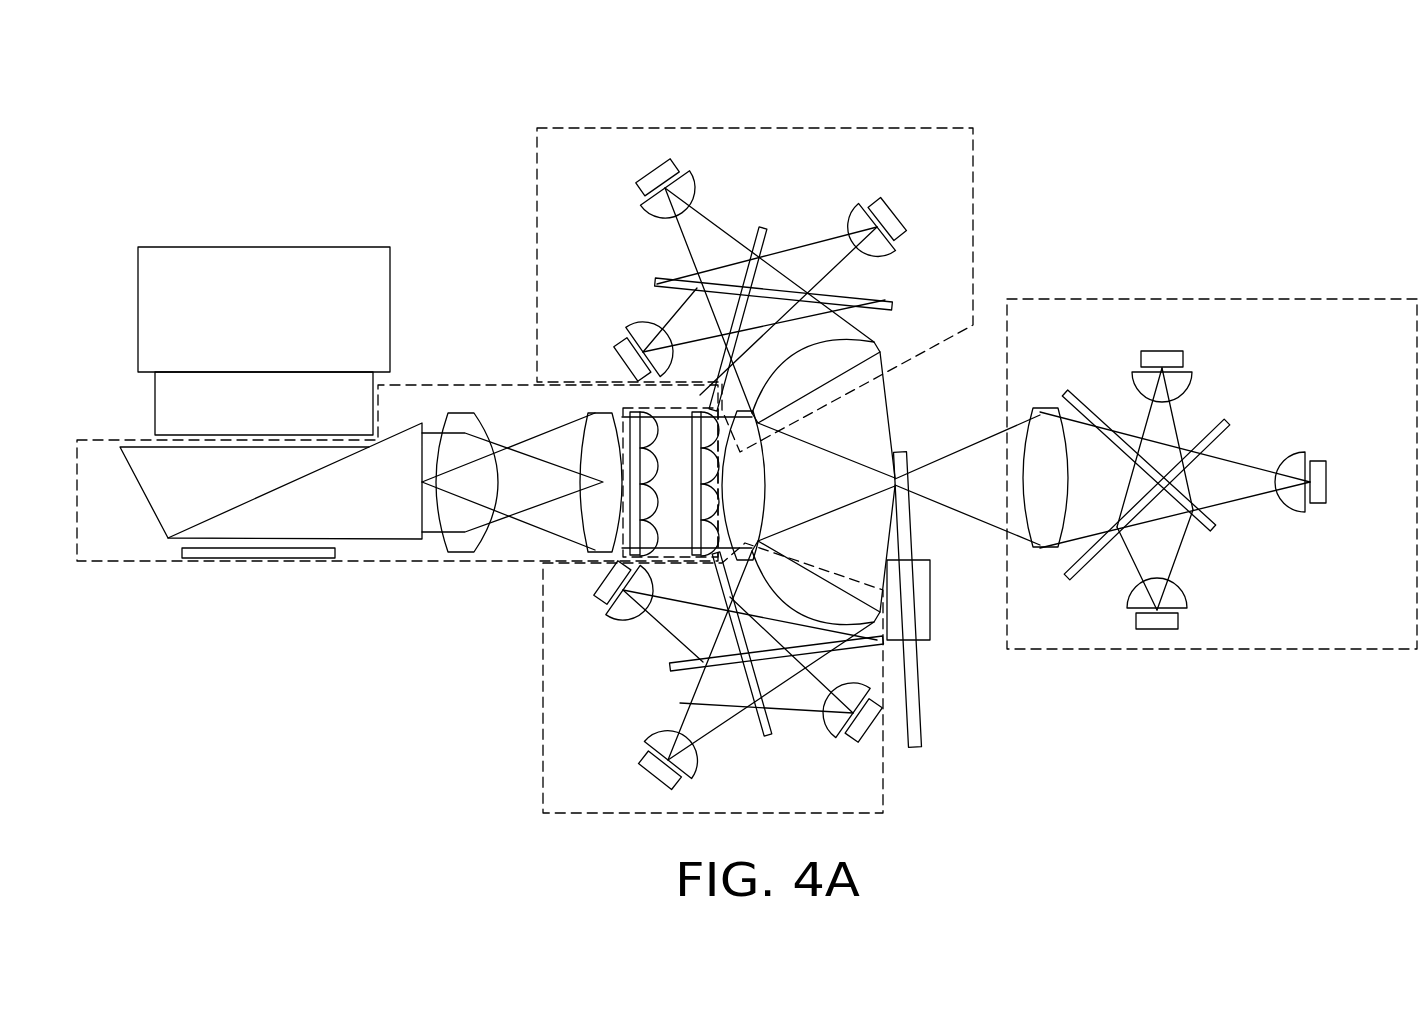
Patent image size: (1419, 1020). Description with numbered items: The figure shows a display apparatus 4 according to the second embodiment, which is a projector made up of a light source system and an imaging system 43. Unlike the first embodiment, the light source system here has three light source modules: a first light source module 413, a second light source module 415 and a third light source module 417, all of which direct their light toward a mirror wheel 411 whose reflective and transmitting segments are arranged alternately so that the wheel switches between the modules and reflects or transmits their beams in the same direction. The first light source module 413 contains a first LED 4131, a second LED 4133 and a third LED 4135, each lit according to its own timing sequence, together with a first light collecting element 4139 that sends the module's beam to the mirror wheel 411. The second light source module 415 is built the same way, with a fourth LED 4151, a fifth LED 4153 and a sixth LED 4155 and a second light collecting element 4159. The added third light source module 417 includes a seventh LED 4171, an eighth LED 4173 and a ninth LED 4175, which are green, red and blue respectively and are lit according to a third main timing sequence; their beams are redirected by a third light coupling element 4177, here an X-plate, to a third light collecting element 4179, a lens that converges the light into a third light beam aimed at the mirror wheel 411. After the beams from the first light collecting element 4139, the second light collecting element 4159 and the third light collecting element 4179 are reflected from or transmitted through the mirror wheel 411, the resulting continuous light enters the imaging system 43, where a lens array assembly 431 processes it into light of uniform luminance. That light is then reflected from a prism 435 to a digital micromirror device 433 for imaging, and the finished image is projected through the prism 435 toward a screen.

The display apparatus 4 is at (953, 95).
The imaging system 43 is at (425, 385).
The lens array assembly 431 is at (660, 410).
The digital micromirror device (DMD) 433 is at (208, 556).
The prism 435 is at (132, 473).
The mirror wheel 411 is at (917, 703).
The first light source module 413 is at (543, 775).
The first LED 4131 is at (637, 613).
The second LED 4133 is at (661, 731).
The third LED 4135 is at (842, 736).
The first light collecting element 4139 is at (790, 566).
The second light source module 415 is at (1182, 299).
The fourth LED 4151 is at (1184, 598).
The fifth LED 4153 is at (1318, 458).
The sixth LED 4155 is at (1158, 353).
The second light collecting element 4159 is at (1045, 408).
The third light source module 417 is at (786, 128).
The seventh LED 4171 is at (851, 208).
The eighth LED 4173 is at (663, 160).
The ninth LED 4175 is at (645, 325).
The third light coupling element 4177 is at (842, 296).
The third light collecting element 4179 is at (880, 345).